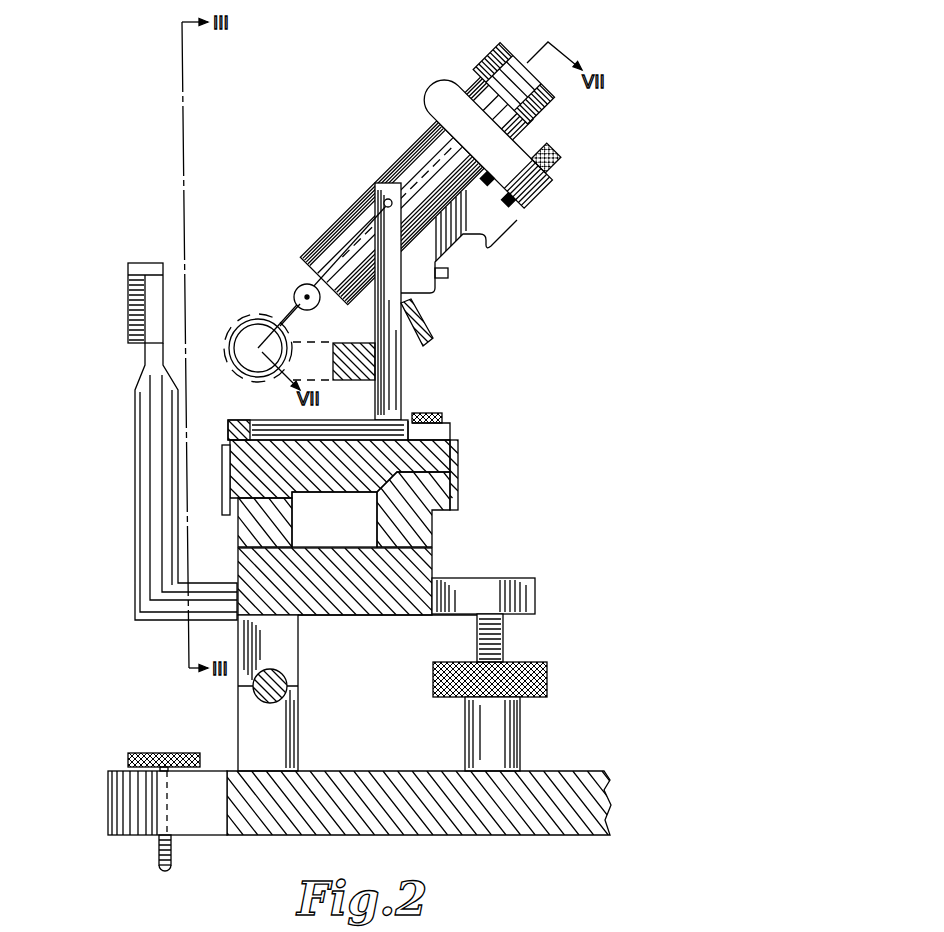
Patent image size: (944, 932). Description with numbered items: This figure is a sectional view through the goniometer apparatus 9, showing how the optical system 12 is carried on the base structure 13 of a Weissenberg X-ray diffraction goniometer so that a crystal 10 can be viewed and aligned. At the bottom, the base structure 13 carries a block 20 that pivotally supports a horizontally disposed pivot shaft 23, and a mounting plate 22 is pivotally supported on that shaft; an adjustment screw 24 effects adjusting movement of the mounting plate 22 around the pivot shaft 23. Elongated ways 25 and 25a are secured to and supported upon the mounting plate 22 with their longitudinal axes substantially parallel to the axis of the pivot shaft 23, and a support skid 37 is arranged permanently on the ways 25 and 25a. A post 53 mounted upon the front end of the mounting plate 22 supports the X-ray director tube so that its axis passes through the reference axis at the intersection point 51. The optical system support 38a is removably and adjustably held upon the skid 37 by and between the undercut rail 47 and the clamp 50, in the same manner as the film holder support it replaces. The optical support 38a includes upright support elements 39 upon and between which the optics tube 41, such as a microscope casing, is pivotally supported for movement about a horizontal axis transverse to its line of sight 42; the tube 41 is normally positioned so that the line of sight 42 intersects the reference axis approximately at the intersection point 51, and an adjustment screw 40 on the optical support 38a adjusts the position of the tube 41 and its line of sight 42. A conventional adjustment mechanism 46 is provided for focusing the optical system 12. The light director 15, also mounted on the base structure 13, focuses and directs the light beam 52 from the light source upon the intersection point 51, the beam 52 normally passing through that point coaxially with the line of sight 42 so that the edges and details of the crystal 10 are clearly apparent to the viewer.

The apparatus 9 is at (95, 655).
The crystal 10 is at (296, 294).
The optical system 12 is at (408, 138).
The base structure 13 is at (573, 730).
The light director 15 is at (238, 323).
The block 20 is at (283, 717).
The mounting plate 22 is at (490, 590).
The pivot shaft 23 is at (283, 674).
The adjustment screw 24 is at (548, 677).
The elongated way 25 is at (423, 525).
The elongated way 25a is at (296, 523).
The support skid 37 is at (444, 462).
The optical system support 38a is at (383, 428).
The upright support element 39 is at (375, 194).
The adjustment screw 40 is at (431, 338).
The optics tube 41 is at (345, 238).
The line of sight 42 is at (413, 182).
The adjustment mechanism 46 is at (517, 208).
The undercut rail 47 is at (242, 427).
The clamp 50 is at (441, 433).
The intersection point 51 is at (306, 285).
The light beam 52 is at (292, 317).
The post 53 is at (150, 466).